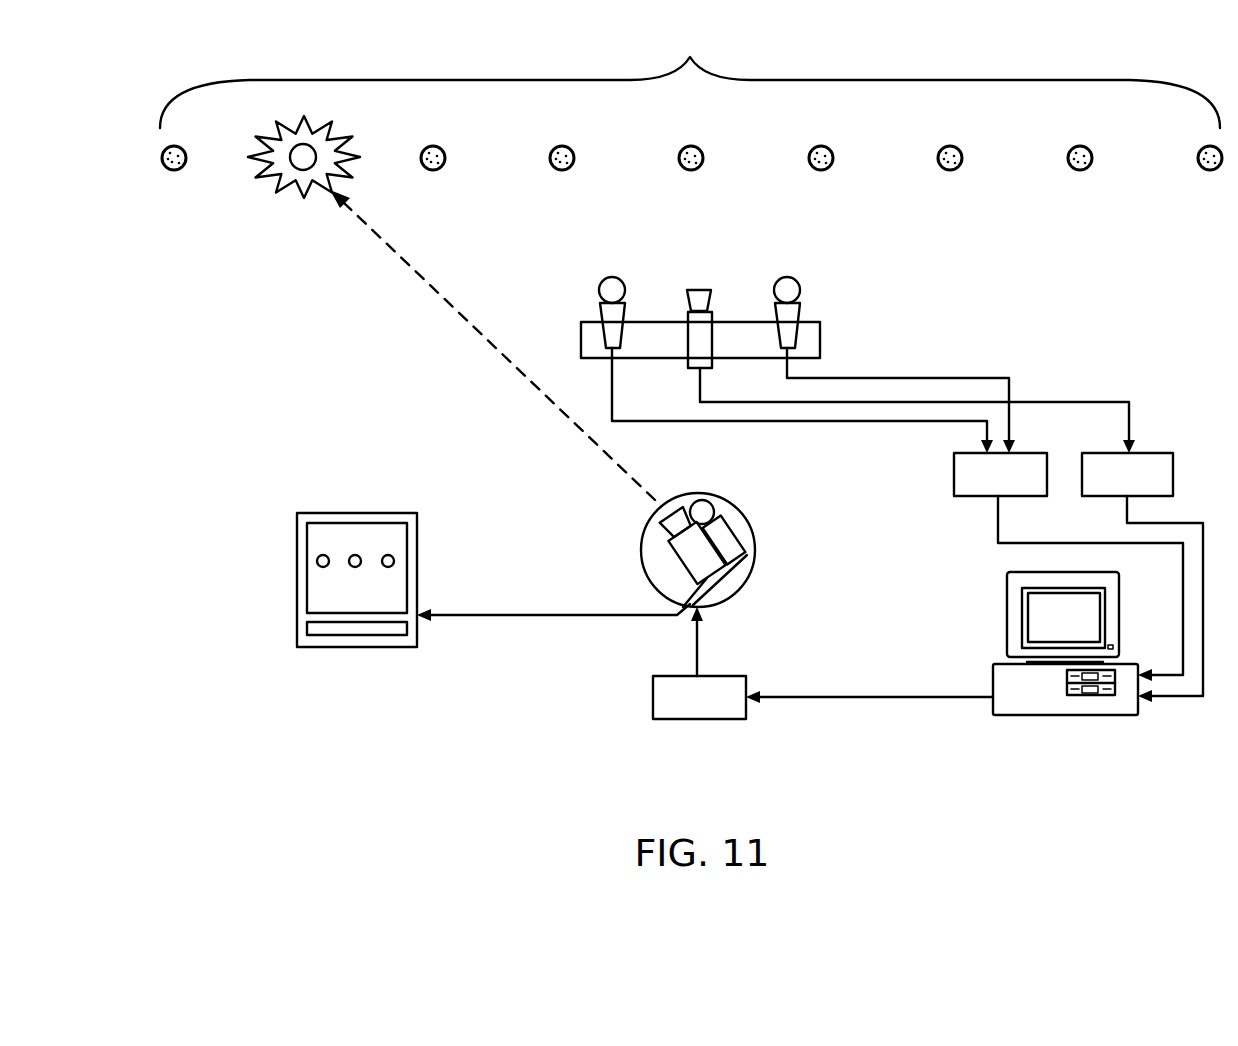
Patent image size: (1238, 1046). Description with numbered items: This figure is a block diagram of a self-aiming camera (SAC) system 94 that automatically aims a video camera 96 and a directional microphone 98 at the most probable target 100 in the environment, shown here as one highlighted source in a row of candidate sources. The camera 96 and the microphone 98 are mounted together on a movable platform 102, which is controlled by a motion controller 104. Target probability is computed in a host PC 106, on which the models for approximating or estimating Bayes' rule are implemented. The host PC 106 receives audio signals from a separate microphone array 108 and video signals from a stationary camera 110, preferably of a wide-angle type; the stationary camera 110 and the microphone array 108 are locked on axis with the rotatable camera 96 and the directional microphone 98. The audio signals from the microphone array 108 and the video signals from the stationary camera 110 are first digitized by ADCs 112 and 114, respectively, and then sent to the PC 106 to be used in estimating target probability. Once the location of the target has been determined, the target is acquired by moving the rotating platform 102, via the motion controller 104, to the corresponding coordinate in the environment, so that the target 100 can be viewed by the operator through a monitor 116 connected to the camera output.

The self-aiming camera system 94 is at (1047, 290).
The video camera 96 is at (680, 556).
The microphone 98 is at (732, 523).
The target 100 is at (690, 57).
The movable platform 102 is at (620, 552).
The motion controller 104 is at (690, 720).
The host PC 106 is at (1067, 716).
The microphone array 108 is at (612, 276).
The stationary camera 110 is at (698, 290).
The ADC 112 is at (954, 470).
The ADC 114 is at (1173, 470).
The monitor 116 is at (357, 511).